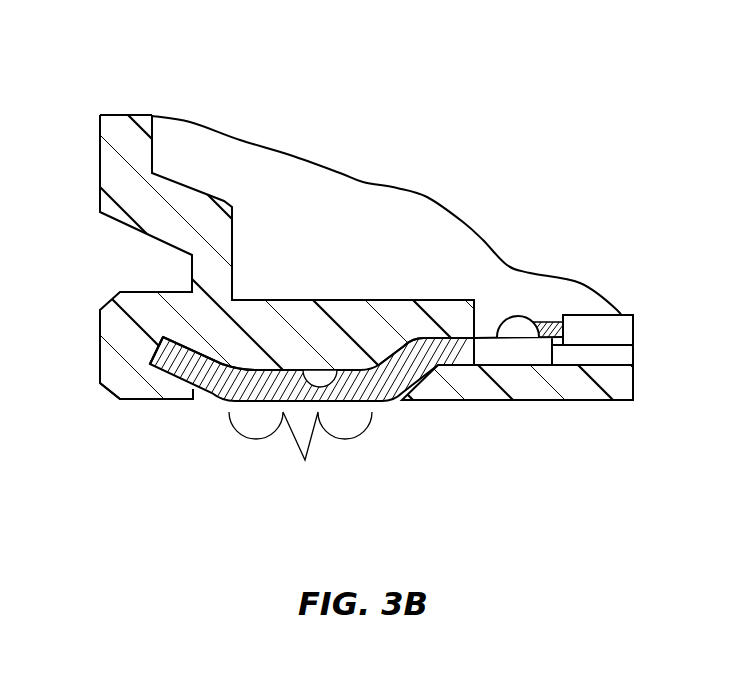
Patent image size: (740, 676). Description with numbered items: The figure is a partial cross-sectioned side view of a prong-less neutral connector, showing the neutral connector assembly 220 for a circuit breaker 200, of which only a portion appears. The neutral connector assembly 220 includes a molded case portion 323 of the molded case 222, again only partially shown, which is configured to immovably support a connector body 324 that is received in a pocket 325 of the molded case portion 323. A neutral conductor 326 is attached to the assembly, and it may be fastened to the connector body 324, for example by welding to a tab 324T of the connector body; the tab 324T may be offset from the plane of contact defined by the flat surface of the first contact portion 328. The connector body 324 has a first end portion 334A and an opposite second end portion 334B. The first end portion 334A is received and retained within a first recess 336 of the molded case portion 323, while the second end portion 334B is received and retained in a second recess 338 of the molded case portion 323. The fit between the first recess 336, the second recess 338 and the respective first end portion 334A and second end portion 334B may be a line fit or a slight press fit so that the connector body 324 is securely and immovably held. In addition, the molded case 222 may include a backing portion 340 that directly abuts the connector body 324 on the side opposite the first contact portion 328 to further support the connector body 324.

The circuit breaker 200 is at (392, 115).
The neutral connector assembly 220 is at (238, 448).
The molded case 222 is at (134, 106).
The molded case portion 323 is at (311, 292).
The connector body 324 is at (395, 407).
The tab 324T is at (518, 337).
The pocket 325 is at (201, 343).
The neutral conductor 326 is at (583, 308).
The first contact portion 328 is at (300, 452).
The first end portion 334A is at (166, 383).
The second end portion 334B is at (486, 353).
The first recess 336 is at (157, 350).
The second recess 338 is at (407, 343).
The backing portion 340 is at (339, 370).